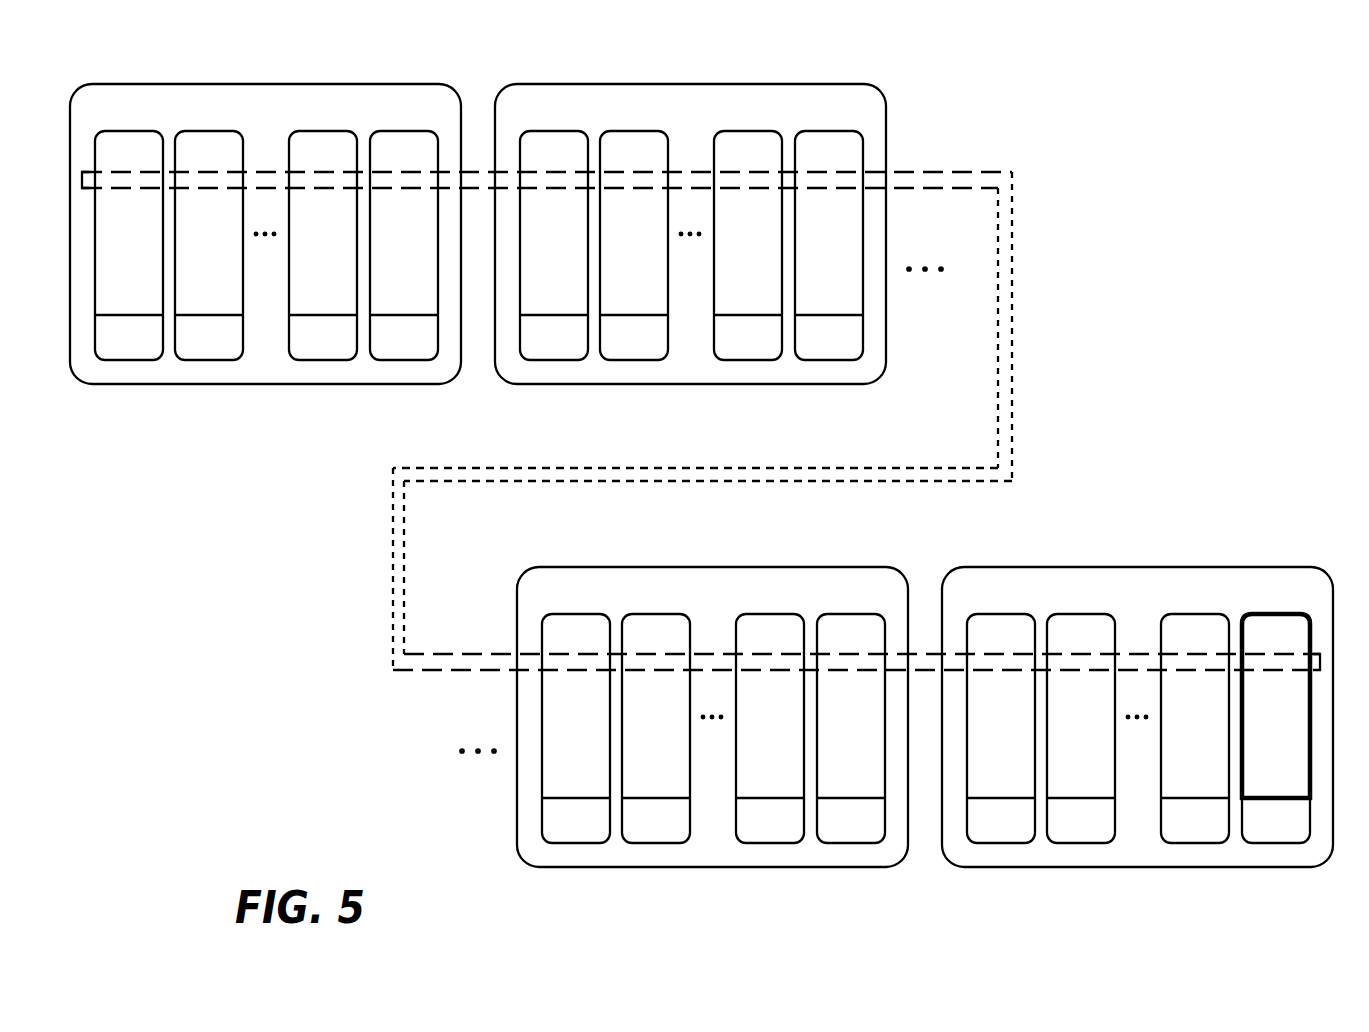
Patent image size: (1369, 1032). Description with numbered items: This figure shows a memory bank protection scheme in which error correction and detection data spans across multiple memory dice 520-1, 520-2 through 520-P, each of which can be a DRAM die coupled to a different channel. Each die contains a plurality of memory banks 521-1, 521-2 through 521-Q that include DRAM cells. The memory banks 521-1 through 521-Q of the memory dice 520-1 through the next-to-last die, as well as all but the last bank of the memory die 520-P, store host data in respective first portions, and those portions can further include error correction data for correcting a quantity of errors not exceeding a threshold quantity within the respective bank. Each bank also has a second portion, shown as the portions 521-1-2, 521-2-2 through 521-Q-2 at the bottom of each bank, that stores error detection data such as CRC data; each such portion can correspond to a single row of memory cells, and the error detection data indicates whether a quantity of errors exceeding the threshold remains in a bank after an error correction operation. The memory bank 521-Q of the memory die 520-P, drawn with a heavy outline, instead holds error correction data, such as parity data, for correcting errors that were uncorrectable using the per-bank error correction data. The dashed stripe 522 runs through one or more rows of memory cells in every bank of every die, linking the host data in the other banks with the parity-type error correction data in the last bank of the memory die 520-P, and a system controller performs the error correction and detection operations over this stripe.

The memory die 520-1 is at (265, 222).
The memory die 520-2 is at (690, 222).
The memory die 520-P is at (1137, 705).
The memory bank 521-1 is at (128, 142).
The memory bank 521-2 is at (207, 142).
The memory bank 521-Q is at (403, 142).
The portion of memory bank 521-1-2 is at (128, 348).
The portion of memory bank 521-2-2 is at (208, 348).
The portion of memory bank 521-Q-2 is at (403, 348).
The stripe 522 is at (922, 172).